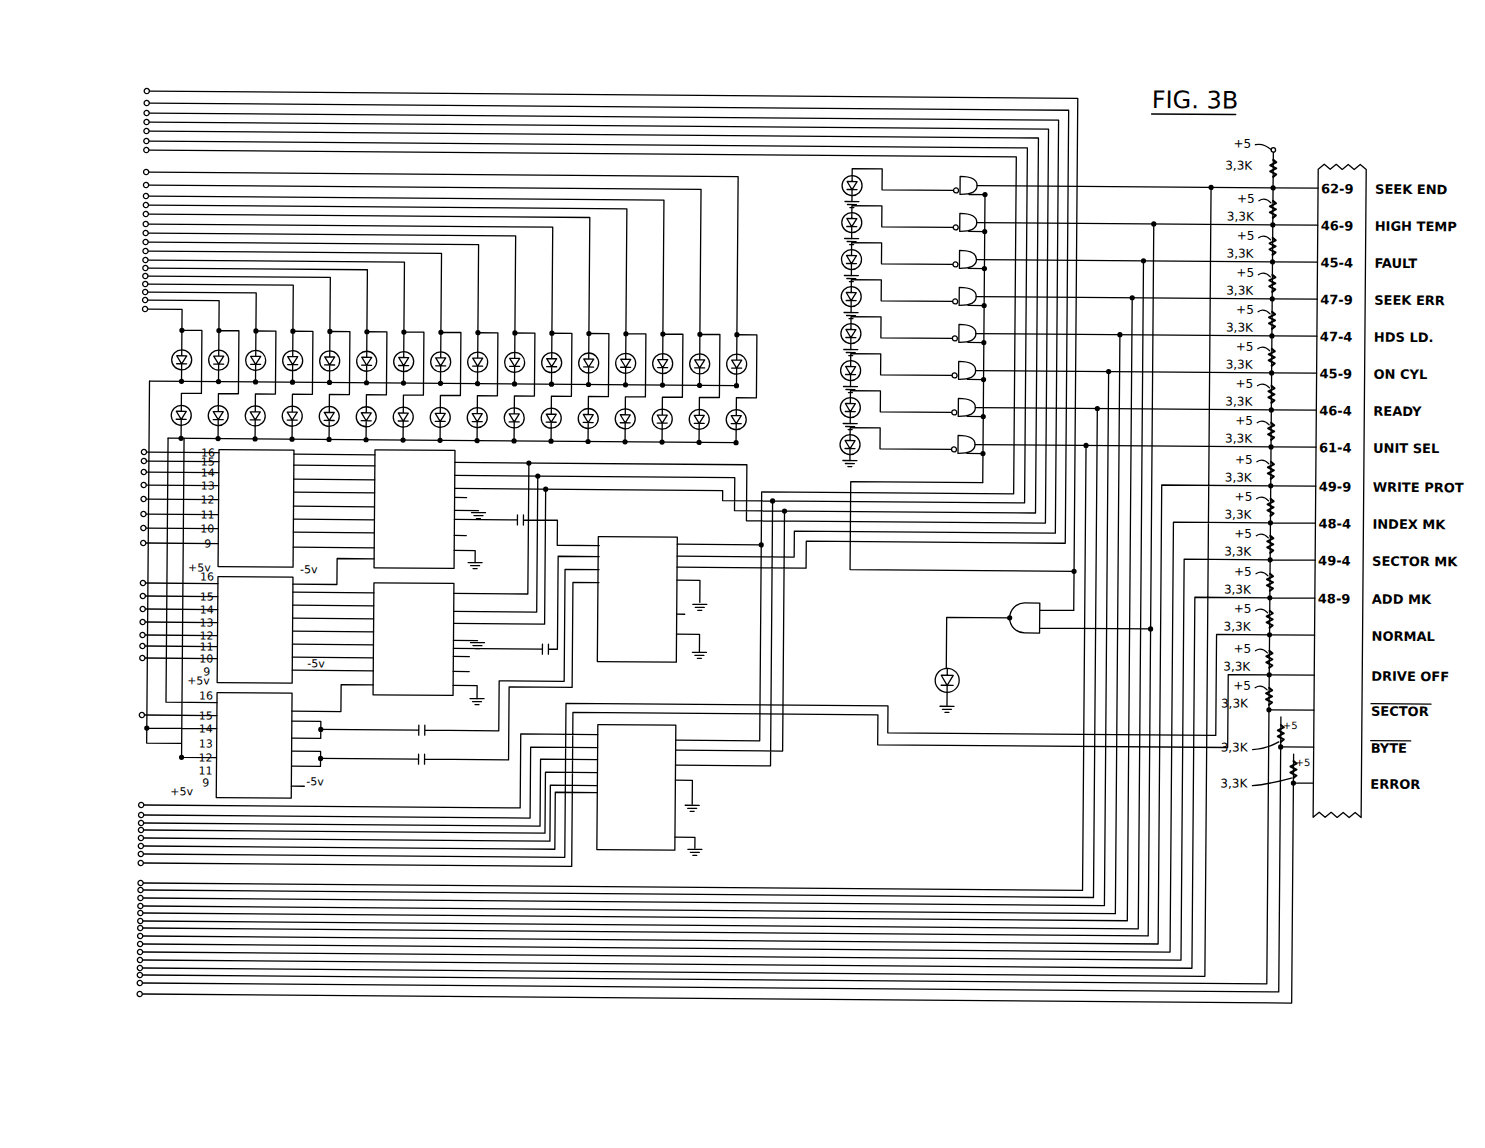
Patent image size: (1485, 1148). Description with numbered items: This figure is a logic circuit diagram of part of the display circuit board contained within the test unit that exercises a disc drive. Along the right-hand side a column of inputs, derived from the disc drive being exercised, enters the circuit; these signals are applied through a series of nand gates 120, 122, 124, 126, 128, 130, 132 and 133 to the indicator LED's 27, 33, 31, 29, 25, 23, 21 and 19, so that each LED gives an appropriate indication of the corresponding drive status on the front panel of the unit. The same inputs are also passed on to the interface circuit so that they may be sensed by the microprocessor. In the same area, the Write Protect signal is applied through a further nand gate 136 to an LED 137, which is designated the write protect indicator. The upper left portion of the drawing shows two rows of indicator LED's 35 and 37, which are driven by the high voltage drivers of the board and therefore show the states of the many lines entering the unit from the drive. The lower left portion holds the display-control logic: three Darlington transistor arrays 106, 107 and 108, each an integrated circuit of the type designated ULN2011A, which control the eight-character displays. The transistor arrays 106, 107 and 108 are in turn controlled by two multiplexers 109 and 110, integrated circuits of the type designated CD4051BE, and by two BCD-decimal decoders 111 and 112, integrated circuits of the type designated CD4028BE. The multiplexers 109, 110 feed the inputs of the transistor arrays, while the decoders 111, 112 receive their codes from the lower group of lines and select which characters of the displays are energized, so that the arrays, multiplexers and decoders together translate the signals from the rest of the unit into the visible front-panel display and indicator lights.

The LED 19 is at (840, 437).
The LED 21 is at (840, 400).
The LED 23 is at (840, 363).
The LED 25 is at (840, 326).
The LED 27 is at (840, 178).
The LED 29 is at (840, 289).
The LED 31 is at (840, 252).
The LED 33 is at (840, 215).
The LED's 35 is at (448, 323).
The LED's 37 is at (672, 432).
The Darlington transistor array 106 is at (293, 452).
The Darlington transistor array 107 is at (283, 678).
The Darlington transistor array 108 is at (300, 802).
The multiplexer 109 is at (458, 452).
The multiplexer 110 is at (412, 694).
The BCD-decimal decoder 111 is at (633, 533).
The BCD-decimal decoder 112 is at (652, 848).
The nand gate 120 is at (956, 177).
The nand gate 122 is at (956, 214).
The nand gate 124 is at (956, 251).
The nand gate 126 is at (956, 288).
The nand gate 128 is at (956, 325).
The nand gate 130 is at (956, 362).
The nand gate 132 is at (956, 399).
The nand gate 133 is at (956, 436).
The nand gate 136 is at (1018, 630).
The LED 137 is at (938, 668).